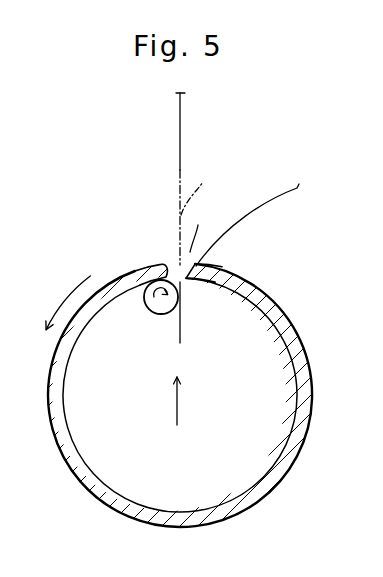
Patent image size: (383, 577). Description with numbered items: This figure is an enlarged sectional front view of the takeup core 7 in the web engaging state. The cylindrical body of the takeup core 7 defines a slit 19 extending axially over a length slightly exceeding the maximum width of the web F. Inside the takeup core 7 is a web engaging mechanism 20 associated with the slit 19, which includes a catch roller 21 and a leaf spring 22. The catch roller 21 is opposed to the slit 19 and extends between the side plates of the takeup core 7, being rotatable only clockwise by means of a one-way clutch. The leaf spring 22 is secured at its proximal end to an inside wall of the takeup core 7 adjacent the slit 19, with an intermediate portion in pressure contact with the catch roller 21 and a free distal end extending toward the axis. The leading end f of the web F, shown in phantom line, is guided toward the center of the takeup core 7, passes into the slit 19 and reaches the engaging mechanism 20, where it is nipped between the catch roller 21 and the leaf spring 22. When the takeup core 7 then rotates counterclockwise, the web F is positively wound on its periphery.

The takeup core 7 is at (273, 478).
The slit 19 is at (171, 255).
The web engaging mechanism 20 is at (178, 415).
The catch roller 21 is at (156, 311).
The leaf spring 22 is at (185, 317).
The web F is at (188, 120).
The leading end of web f is at (197, 209).